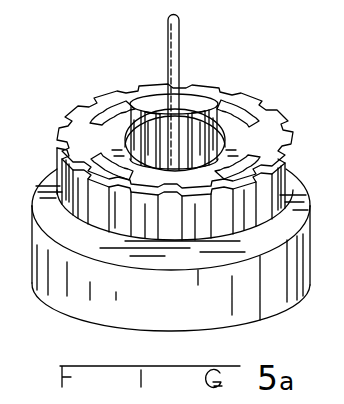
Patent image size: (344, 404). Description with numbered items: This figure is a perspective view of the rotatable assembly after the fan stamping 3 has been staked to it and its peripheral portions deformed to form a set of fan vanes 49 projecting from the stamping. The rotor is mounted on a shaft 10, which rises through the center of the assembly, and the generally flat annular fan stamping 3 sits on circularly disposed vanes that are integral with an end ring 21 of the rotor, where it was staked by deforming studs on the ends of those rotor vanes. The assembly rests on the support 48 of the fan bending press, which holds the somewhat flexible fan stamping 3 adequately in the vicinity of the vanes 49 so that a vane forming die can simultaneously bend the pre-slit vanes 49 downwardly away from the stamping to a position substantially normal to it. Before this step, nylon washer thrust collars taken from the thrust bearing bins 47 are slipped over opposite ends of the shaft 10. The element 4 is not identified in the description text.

The shaft 10 is at (168, 44).
The arcuate slots 21 is at (210, 95).
The ratchet plate 3 is at (262, 118).
The tooth 47 is at (62, 170).
The tooth 49 is at (282, 176).
The base 4 is at (190, 221).
The cylindrical base 48 is at (268, 291).